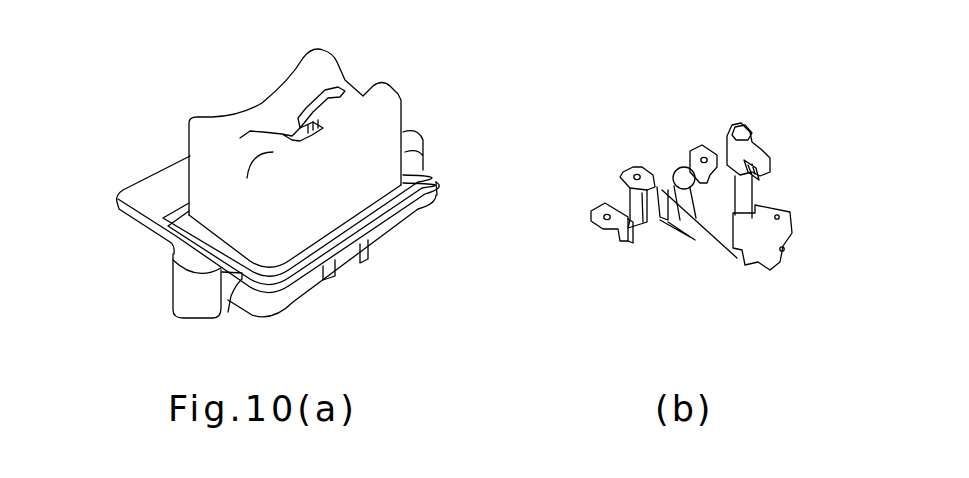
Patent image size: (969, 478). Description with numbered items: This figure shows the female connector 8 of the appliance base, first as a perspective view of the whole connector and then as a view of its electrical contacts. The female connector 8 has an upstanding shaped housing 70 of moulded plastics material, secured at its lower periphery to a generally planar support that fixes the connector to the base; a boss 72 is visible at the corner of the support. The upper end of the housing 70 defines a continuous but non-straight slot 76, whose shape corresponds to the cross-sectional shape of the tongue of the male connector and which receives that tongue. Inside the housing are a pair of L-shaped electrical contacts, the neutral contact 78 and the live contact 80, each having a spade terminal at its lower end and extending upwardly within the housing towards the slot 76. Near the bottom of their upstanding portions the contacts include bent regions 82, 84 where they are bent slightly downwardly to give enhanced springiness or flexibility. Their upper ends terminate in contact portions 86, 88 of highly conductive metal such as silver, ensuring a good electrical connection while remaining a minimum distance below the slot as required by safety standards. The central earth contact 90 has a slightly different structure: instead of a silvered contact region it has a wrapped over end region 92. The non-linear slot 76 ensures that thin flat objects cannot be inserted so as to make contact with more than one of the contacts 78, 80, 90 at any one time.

In FIG. 10A, the female connector 8 is at (380, 88).
In FIG. 10A, the housing 70 is at (401, 120).
In FIG. 10A, the cylindrical boss 72 is at (153, 196).
In FIG. 10A, the slot 76 is at (313, 102).
In FIG. 10B, the neutral contact 78 is at (610, 224).
In FIG. 10B, the live contact 80 is at (695, 150).
In FIG. 10B, the bent region 82 is at (651, 200).
In FIG. 10B, the bent region 84 is at (753, 143).
In FIG. 10B, the contact portion 86 is at (680, 178).
In FIG. 10B, the contact portion 88 is at (755, 135).
In FIG. 10B, the earth contact 90 is at (742, 200).
In FIG. 10B, the wrapped over end region 92 is at (753, 172).